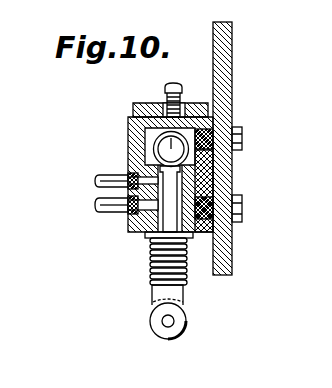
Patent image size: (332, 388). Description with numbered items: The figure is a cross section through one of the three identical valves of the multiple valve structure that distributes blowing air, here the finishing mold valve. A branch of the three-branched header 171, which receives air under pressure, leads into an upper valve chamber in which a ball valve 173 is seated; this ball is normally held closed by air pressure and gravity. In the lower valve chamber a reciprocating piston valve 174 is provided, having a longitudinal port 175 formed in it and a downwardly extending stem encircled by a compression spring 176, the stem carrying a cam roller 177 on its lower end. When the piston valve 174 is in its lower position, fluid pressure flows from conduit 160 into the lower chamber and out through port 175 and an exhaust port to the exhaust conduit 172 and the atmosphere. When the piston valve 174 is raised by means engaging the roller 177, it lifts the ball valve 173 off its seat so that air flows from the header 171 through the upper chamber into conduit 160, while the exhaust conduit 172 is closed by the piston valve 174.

The conduit 160 is at (112, 176).
The three-branched header 171 is at (169, 88).
The exhaust conduit 172 is at (97, 210).
The ball valve 173 is at (156, 143).
The reciprocating piston valve 174 is at (170, 218).
The longitudinal port 175 is at (128, 218).
The compression spring 176 is at (150, 277).
The cam roller 177 is at (151, 333).